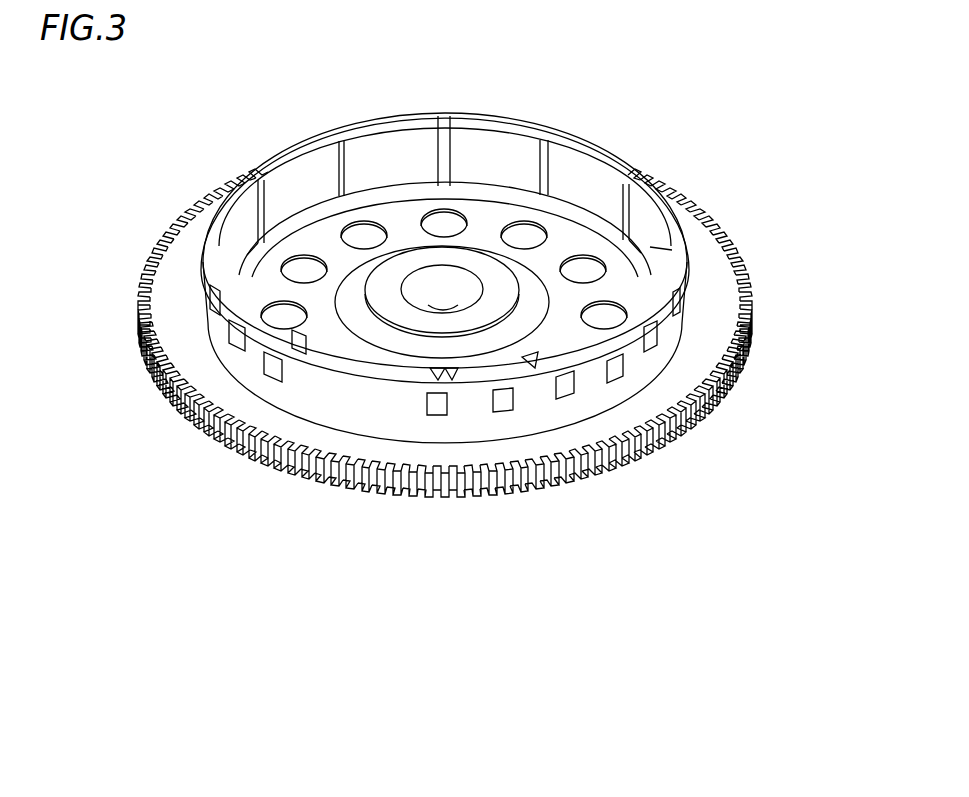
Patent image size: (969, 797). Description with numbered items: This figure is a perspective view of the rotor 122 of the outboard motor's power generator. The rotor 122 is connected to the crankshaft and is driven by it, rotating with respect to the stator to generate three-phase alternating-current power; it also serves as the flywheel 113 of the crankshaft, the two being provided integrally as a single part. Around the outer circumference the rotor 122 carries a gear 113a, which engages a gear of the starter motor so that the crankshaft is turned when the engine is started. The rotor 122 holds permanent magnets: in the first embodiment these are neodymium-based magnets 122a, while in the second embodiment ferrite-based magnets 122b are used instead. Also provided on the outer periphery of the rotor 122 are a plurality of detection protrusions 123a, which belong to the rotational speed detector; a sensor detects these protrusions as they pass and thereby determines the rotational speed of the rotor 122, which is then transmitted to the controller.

The rotor 122 is at (644, 66).
The flywheel 113 is at (489, 333).
The gear 113a is at (768, 275).
The neodymium-based magnets 122a is at (364, 120).
The ferrite-based magnets 122b is at (415, 355).
The detection protrusions 123a is at (207, 302).